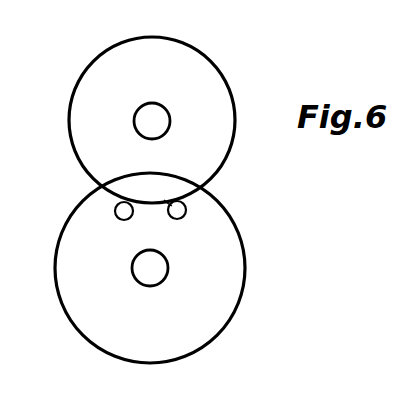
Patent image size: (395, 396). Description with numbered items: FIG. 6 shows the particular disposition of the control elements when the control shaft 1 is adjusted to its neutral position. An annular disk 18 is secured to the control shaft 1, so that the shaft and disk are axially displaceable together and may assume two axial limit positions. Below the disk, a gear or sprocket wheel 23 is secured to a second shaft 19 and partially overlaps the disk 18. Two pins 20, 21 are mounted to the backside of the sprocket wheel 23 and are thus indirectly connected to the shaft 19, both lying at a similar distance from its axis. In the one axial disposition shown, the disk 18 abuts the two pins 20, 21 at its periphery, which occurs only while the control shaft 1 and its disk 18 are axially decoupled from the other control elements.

The control shaft 1 is at (145, 117).
The annular disk 18 is at (72, 104).
The pin 21 is at (176, 206).
The pin 20 is at (117, 210).
The shaft 19 is at (141, 272).
The gear or sprocket wheel 23 is at (117, 339).